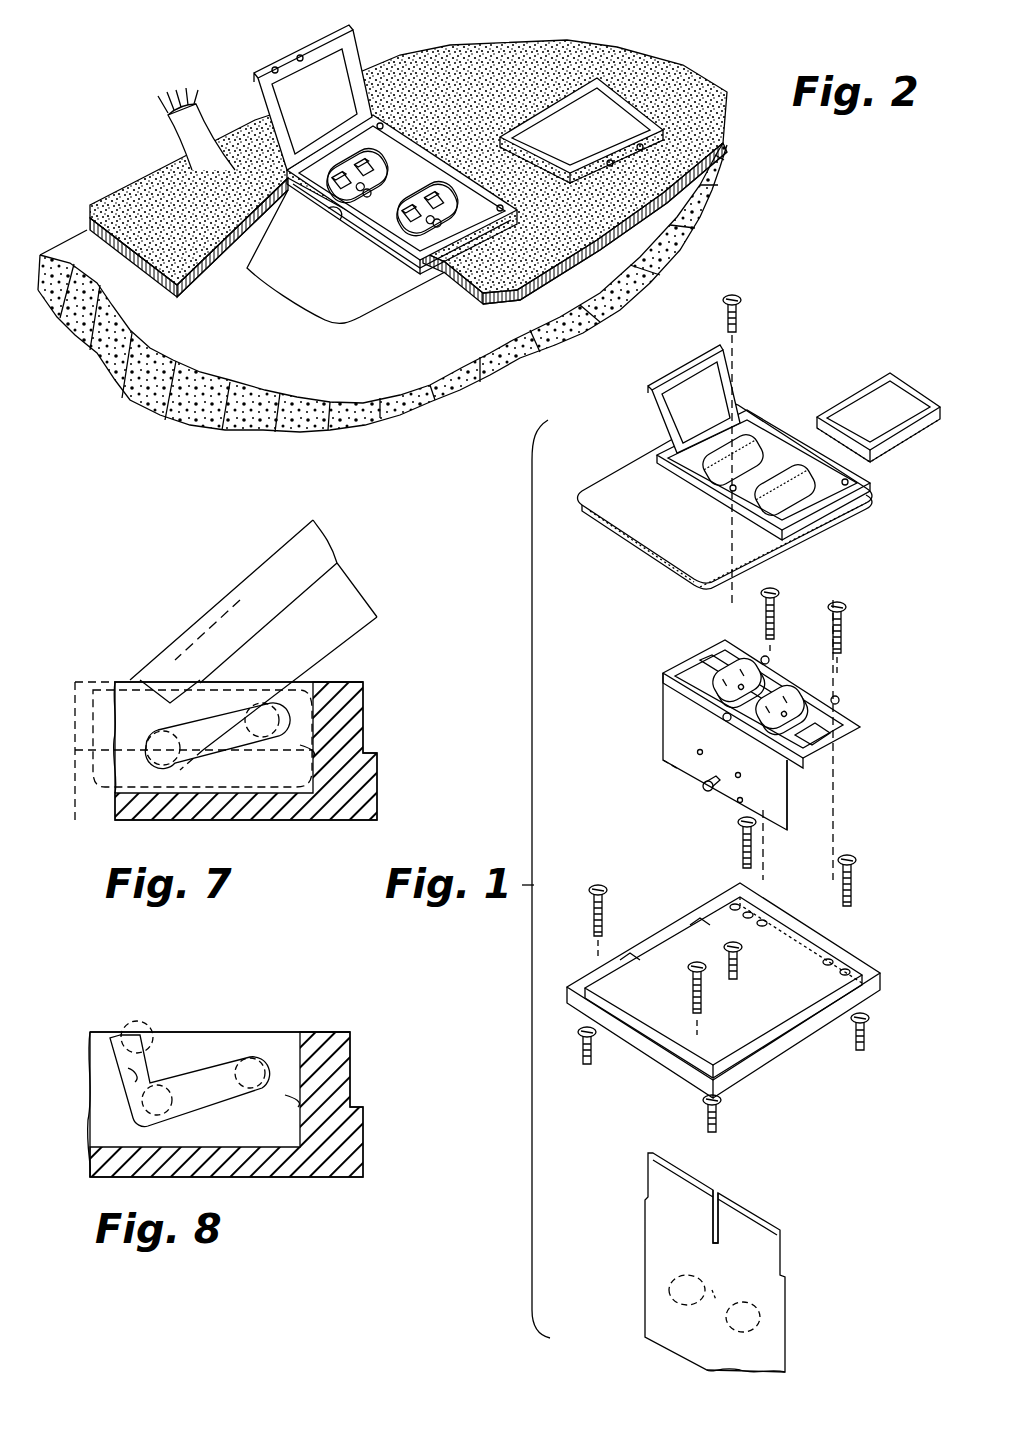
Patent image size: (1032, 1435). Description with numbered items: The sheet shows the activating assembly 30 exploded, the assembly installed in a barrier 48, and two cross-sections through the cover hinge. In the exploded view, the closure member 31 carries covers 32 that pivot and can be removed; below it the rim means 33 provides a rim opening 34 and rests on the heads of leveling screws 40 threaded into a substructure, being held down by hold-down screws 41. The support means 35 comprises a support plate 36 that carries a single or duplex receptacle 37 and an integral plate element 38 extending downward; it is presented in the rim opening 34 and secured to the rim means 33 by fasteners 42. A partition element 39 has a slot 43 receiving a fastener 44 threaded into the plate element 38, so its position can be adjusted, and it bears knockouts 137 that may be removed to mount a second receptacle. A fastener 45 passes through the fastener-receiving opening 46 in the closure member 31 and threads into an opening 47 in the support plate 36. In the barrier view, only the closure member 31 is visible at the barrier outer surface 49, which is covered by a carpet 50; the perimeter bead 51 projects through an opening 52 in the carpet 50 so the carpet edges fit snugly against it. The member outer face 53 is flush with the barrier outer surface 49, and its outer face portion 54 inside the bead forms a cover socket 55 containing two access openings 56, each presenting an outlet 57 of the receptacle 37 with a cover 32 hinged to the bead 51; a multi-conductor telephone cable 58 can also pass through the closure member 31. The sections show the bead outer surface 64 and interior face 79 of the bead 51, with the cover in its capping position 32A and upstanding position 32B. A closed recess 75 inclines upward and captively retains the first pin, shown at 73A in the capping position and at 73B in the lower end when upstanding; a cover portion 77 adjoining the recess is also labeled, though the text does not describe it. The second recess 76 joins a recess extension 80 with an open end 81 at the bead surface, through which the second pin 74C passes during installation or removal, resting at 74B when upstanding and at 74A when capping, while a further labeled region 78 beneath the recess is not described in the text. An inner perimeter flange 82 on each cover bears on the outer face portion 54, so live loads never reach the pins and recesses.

In FIG. 2, the activating assembly 30 is at (500, 169).
In FIG. 2, the closure member 31 is at (287, 297).
In FIG. 1, the closure member 31 is at (622, 467).
In FIG. 2, the cover 32 is at (330, 62).
In FIG. 1, the cover 32 is at (700, 380).
In FIG. 7, the cover in capping position 32A is at (73, 798).
In FIG. 7, the cover in upstanding position 32B is at (357, 573).
In FIG. 1, the rim means 33 is at (750, 1007).
In FIG. 1, the rim opening 34 is at (877, 987).
In FIG. 1, the support means 35 is at (753, 726).
In FIG. 1, the support plate 36 is at (698, 655).
In FIG. 1, the receptacle 37 is at (777, 690).
In FIG. 1, the plate element 38 is at (673, 700).
In FIG. 1, the partition element 39 is at (722, 1260).
In FIG. 1, the leveling screws 40 is at (705, 1127).
In FIG. 1, the hold-down screws 41 is at (845, 887).
In FIG. 1, the fasteners 42 is at (837, 607).
In FIG. 1, the slot 43 is at (717, 1190).
In FIG. 1, the fastener 44 is at (703, 783).
In FIG. 1, the fastener 45 is at (740, 318).
In FIG. 1, the fastener-receiving opening 46 is at (731, 488).
In FIG. 1, the opening 47 is at (723, 717).
In FIG. 2, the barrier 48 is at (727, 192).
In FIG. 2, the barrier outer surface 49 is at (316, 381).
In FIG. 2, the carpet 50 is at (683, 93).
In FIG. 2, the perimeter bead 51 is at (460, 275).
In FIG. 7, the perimeter bead 51 is at (353, 717).
In FIG. 8, the perimeter bead 51 is at (340, 1067).
In FIG. 2, the opening 52 is at (334, 213).
In FIG. 2, the member outer face 53 is at (352, 311).
In FIG. 2, the outer face portion 54 is at (425, 200).
In FIG. 7, the outer face portion 54 is at (210, 800).
In FIG. 8, the outer face portion 54 is at (117, 1133).
In FIG. 2, the cover socket 55 is at (382, 148).
In FIG. 2, the access opening 56 is at (437, 227).
In FIG. 2, the outlet 57 is at (420, 220).
In FIG. 2, the multi-conductor telephone cable 58 is at (192, 132).
In FIG. 7, the bead outer surface 64 is at (353, 683).
In FIG. 8, the bead outer surface 64 is at (320, 1032).
In FIG. 7, the first pin in capping position 73A is at (263, 682).
In FIG. 7, the first pin in upstanding position 73B is at (180, 748).
In FIG. 8, the second pin in capping position 74A is at (267, 1057).
In FIG. 8, the second pin in upstanding position 74B is at (197, 1110).
In FIG. 8, the second pin during removal or installation 74C is at (150, 1013).
In FIG. 7, the recess 75 is at (217, 717).
In FIG. 8, the recess 76 is at (217, 1067).
In FIG. 7, the lid edge 77 is at (137, 693).
In FIG. 8, the slot leg 78 is at (150, 1133).
In FIG. 7, the interior face 79 is at (313, 750).
In FIG. 8, the interior face 79 is at (287, 1100).
In FIG. 8, the recess extension 80 is at (133, 1070).
In FIG. 8, the open end 81 is at (137, 1040).
In FIG. 7, the inner perimeter flange 82 is at (107, 795).
In FIG. 1, the knockouts 137 is at (653, 1317).